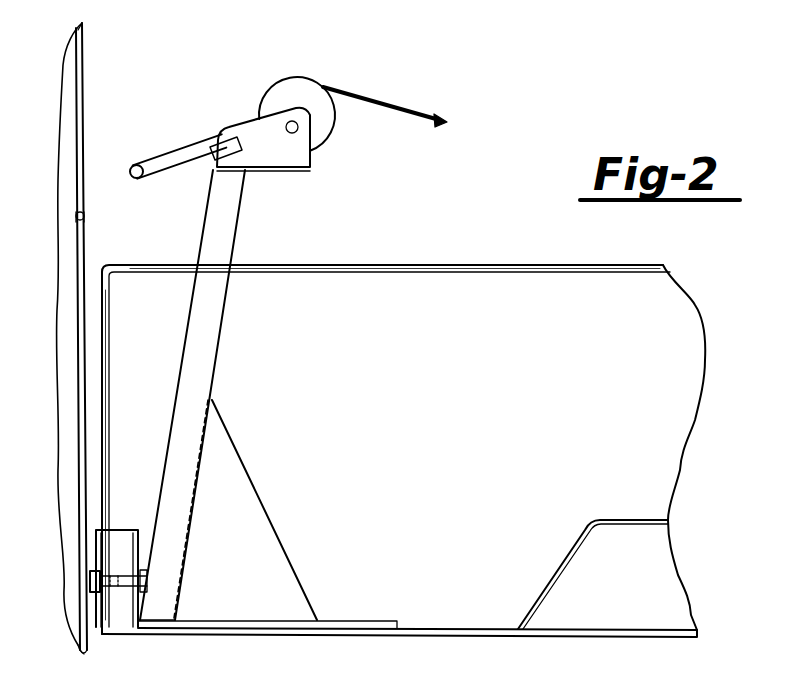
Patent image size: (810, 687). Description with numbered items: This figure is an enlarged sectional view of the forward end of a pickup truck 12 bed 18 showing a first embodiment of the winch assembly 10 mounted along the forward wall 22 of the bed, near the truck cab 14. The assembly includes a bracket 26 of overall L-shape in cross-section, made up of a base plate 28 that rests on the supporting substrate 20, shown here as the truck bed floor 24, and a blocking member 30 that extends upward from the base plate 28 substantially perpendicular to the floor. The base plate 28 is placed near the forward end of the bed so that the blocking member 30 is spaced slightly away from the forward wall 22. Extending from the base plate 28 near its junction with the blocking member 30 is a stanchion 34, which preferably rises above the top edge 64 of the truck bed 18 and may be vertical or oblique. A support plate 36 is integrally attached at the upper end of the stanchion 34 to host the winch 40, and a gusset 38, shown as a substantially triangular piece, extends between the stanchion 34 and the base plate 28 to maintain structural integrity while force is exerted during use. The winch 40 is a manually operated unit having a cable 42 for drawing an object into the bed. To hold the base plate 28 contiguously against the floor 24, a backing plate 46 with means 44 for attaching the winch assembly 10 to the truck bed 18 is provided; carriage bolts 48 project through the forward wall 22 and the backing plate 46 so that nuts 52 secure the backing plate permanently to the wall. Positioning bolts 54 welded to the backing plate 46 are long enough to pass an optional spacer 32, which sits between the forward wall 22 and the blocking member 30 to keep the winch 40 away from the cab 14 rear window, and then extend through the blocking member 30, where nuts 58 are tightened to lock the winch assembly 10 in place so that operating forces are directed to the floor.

The winch assembly 10 is at (217, 97).
The upright post 12 is at (83, 65).
The truck cab 14 is at (90, 252).
The truck bed 18 is at (508, 263).
The supporting substrate 20 is at (500, 628).
The forward wall 22 is at (113, 358).
The truck bed floor 24 is at (440, 628).
The bracket 26 is at (324, 598).
The base plate 28 is at (373, 621).
The blocking member 30 is at (142, 568).
The spacer 32 is at (124, 540).
The stanchion 34 is at (216, 298).
The support plate 36 is at (280, 172).
The gusset 38 is at (248, 472).
The winch 40 is at (280, 95).
The cable 42 is at (376, 98).
The means for attaching 44 is at (105, 641).
The backing plate 46 is at (382, 686).
The carriage bolts 48 is at (140, 605).
The nuts 52 is at (564, 676).
The positioning bolts 54 is at (82, 652).
The nuts 58 is at (88, 572).
The top edge 64 is at (390, 263).